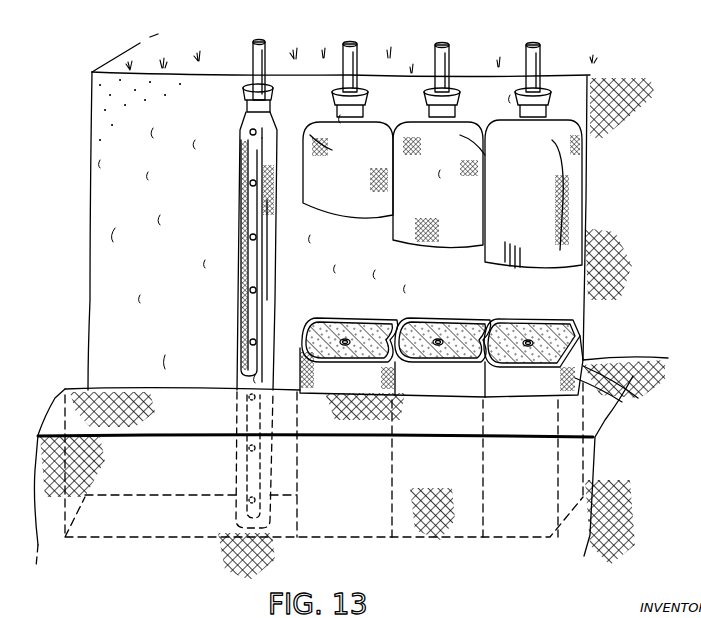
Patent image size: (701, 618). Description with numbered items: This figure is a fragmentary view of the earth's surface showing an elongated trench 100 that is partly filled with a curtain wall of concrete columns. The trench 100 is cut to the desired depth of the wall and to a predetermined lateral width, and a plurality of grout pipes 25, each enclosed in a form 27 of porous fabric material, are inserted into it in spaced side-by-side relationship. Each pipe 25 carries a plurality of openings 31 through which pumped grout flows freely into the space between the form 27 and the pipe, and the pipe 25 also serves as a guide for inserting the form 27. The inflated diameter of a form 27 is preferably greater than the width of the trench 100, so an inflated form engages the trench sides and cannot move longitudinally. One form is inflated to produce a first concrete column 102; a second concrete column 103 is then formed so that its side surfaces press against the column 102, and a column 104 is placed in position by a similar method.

The pipe 25 is at (257, 44).
The form 27 is at (240, 173).
The openings 31 is at (250, 290).
The trench 100 is at (144, 377).
The first concrete column 102 is at (562, 320).
The second concrete column 103 is at (476, 318).
The column 104 is at (383, 318).